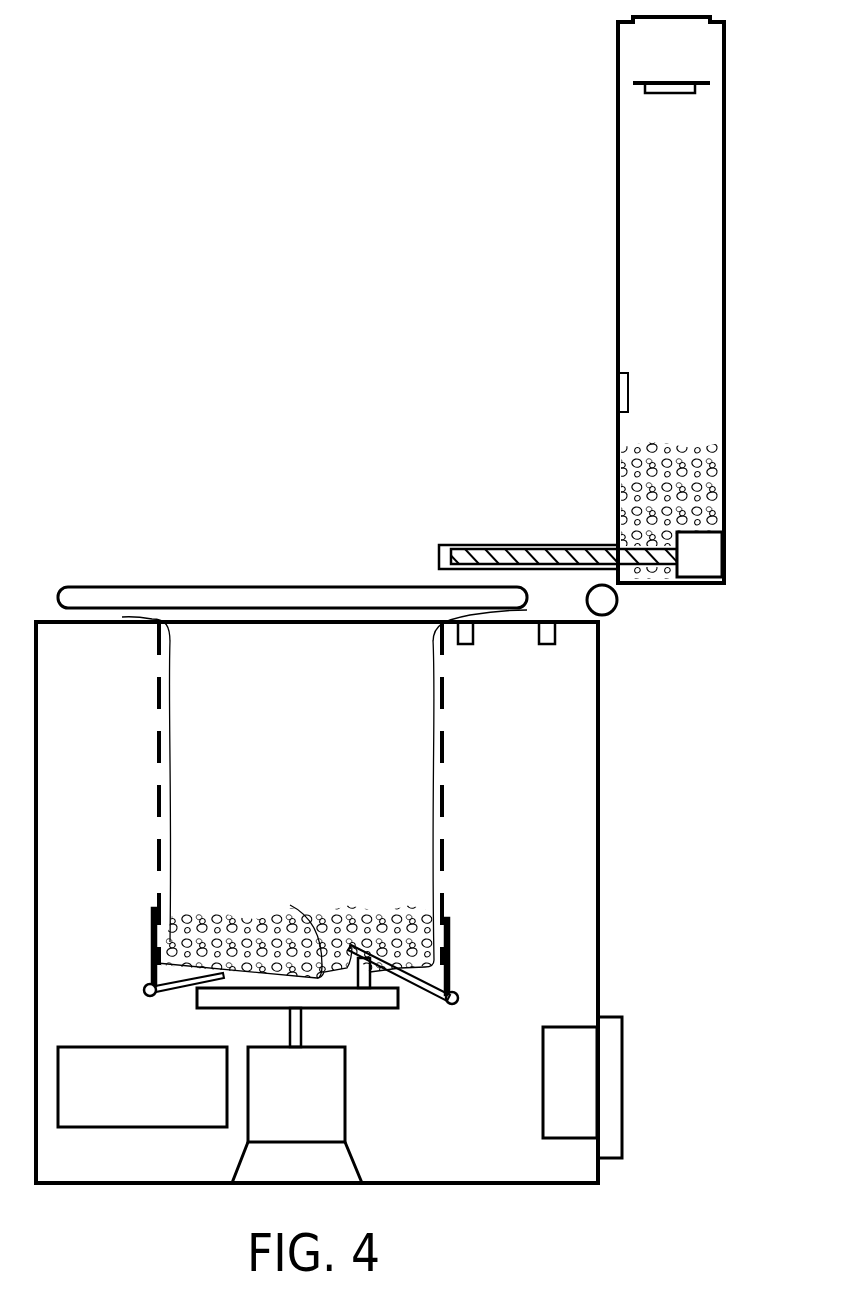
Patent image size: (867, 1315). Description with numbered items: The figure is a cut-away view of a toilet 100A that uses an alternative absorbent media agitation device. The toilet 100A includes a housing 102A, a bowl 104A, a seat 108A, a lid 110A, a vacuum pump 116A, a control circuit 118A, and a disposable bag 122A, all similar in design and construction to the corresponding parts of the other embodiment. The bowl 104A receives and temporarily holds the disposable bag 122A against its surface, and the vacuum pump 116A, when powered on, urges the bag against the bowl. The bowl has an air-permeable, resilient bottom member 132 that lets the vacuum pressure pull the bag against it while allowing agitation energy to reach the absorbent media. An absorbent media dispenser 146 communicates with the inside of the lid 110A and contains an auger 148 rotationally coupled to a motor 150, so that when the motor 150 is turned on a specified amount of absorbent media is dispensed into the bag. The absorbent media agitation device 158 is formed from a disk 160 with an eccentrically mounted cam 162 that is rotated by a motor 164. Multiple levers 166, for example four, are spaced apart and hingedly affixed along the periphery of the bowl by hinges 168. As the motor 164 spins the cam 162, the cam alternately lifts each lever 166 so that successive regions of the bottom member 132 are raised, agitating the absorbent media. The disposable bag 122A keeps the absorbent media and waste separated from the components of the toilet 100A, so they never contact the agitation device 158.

The toilet 100A is at (275, 327).
The housing 102A is at (619, 840).
The bowl 104A is at (156, 765).
The seat 108A is at (195, 585).
The lid 110A is at (726, 262).
The vacuum pump 116A is at (570, 1027).
The control circuit 118A is at (137, 1047).
The disposable bag 122A is at (430, 742).
The bottom member 132 is at (290, 905).
The absorbent media dispenser 146 is at (520, 545).
The auger 148 is at (440, 558).
The motor 150 is at (722, 560).
The absorbent media agitation device 158 is at (324, 1038).
The disk 160 is at (380, 1010).
The cam 162 is at (390, 958).
The motor 164 is at (347, 1107).
The levers 166 is at (410, 962).
The hinges 168 is at (458, 1000).